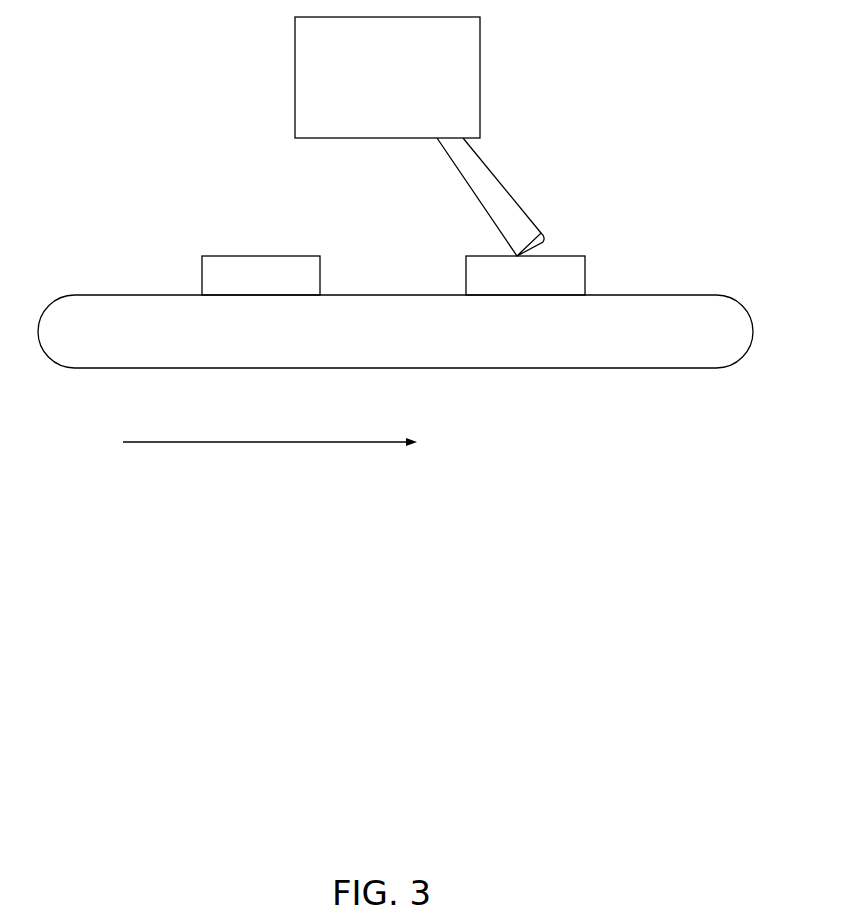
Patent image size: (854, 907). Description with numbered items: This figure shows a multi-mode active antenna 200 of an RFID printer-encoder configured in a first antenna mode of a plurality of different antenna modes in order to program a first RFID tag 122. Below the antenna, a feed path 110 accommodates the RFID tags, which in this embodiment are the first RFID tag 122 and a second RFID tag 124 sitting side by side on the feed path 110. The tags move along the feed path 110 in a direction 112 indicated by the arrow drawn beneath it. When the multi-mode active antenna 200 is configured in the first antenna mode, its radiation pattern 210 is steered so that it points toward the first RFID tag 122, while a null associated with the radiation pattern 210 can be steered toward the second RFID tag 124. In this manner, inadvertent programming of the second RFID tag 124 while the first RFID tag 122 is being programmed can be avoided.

The feed path 110 is at (718, 295).
The direction of movement 112 is at (198, 443).
The first RFID tag 122 is at (525, 275).
The second RFID tag 124 is at (261, 275).
The multi-mode active antenna 200 is at (387, 77).
The radiation pattern 210 is at (508, 193).